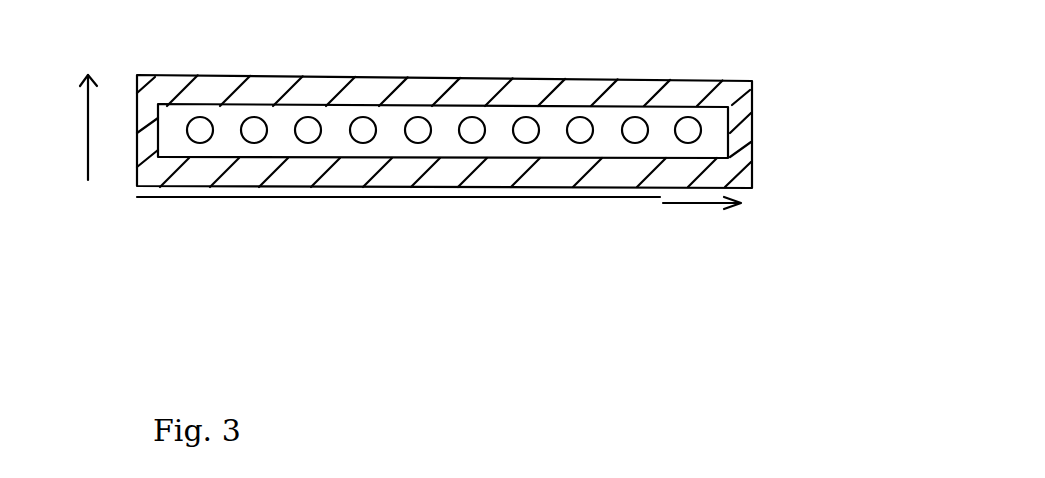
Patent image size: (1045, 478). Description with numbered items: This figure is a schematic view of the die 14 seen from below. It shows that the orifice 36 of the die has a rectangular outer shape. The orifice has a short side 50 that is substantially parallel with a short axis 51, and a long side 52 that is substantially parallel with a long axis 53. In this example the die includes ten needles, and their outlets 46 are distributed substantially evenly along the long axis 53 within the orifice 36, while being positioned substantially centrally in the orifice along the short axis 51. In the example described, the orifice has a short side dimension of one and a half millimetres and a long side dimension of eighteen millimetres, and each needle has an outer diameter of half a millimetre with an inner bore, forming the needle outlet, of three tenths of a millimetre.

The die 14 is at (270, 272).
The orifice 36 is at (417, 157).
The outlets 46 is at (200, 130).
The short side 50 is at (729, 131).
The short axis 51 is at (85, 125).
The long side 52 is at (577, 157).
The long axis 53 is at (663, 203).